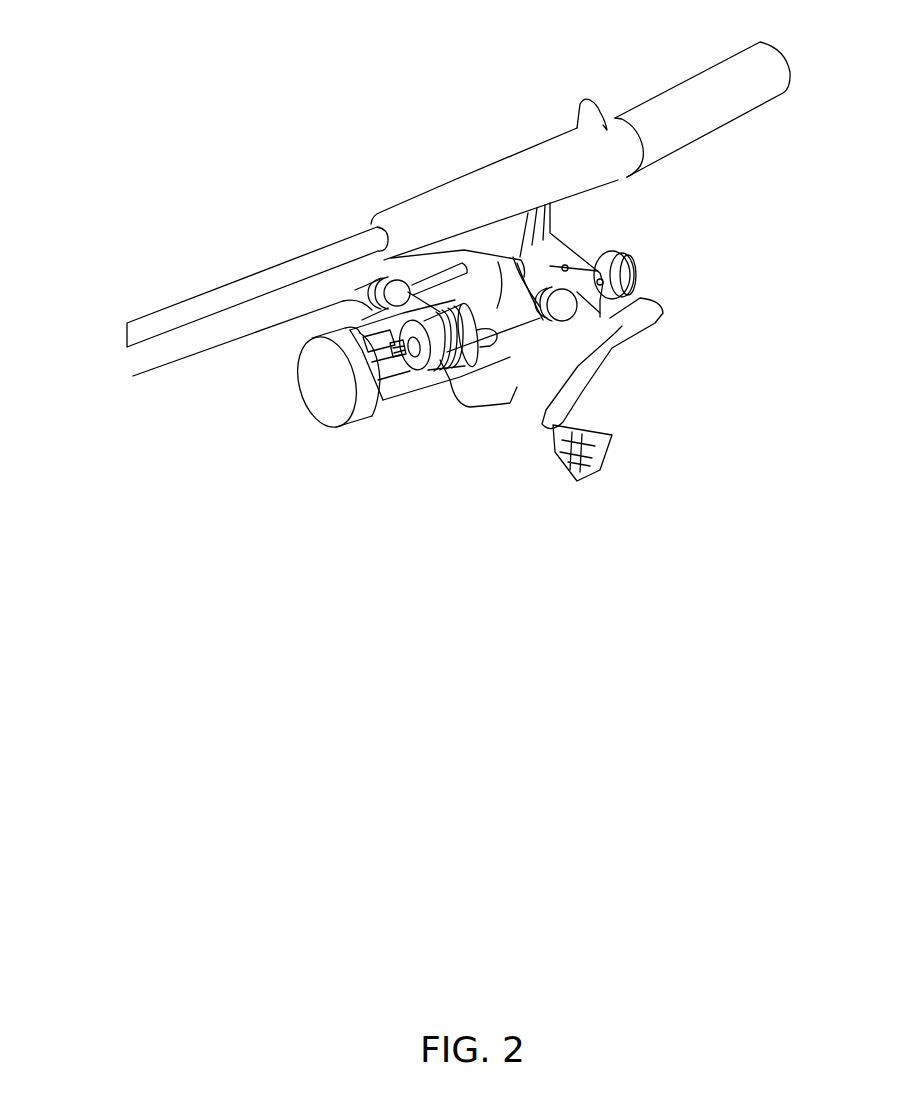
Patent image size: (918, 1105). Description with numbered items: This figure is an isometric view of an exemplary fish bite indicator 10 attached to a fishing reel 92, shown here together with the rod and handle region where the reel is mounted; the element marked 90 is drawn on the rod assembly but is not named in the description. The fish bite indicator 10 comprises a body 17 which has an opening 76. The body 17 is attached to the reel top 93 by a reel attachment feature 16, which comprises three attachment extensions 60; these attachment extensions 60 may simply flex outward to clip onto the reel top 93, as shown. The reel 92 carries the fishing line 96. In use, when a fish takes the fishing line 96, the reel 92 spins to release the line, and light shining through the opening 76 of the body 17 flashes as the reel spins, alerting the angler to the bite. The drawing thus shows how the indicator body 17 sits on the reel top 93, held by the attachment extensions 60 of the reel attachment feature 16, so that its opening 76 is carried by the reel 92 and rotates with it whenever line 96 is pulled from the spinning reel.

The fishing line 96 is at (125, 370).
The tube 90 is at (357, 245).
The fish bite indicator 10 is at (330, 348).
The reel attachment feature 16 is at (393, 335).
The body 17 is at (318, 362).
The attachment extensions 60 is at (400, 392).
The opening 76 is at (365, 392).
The fishing reel 92 is at (507, 365).
The reel top 93 is at (450, 380).